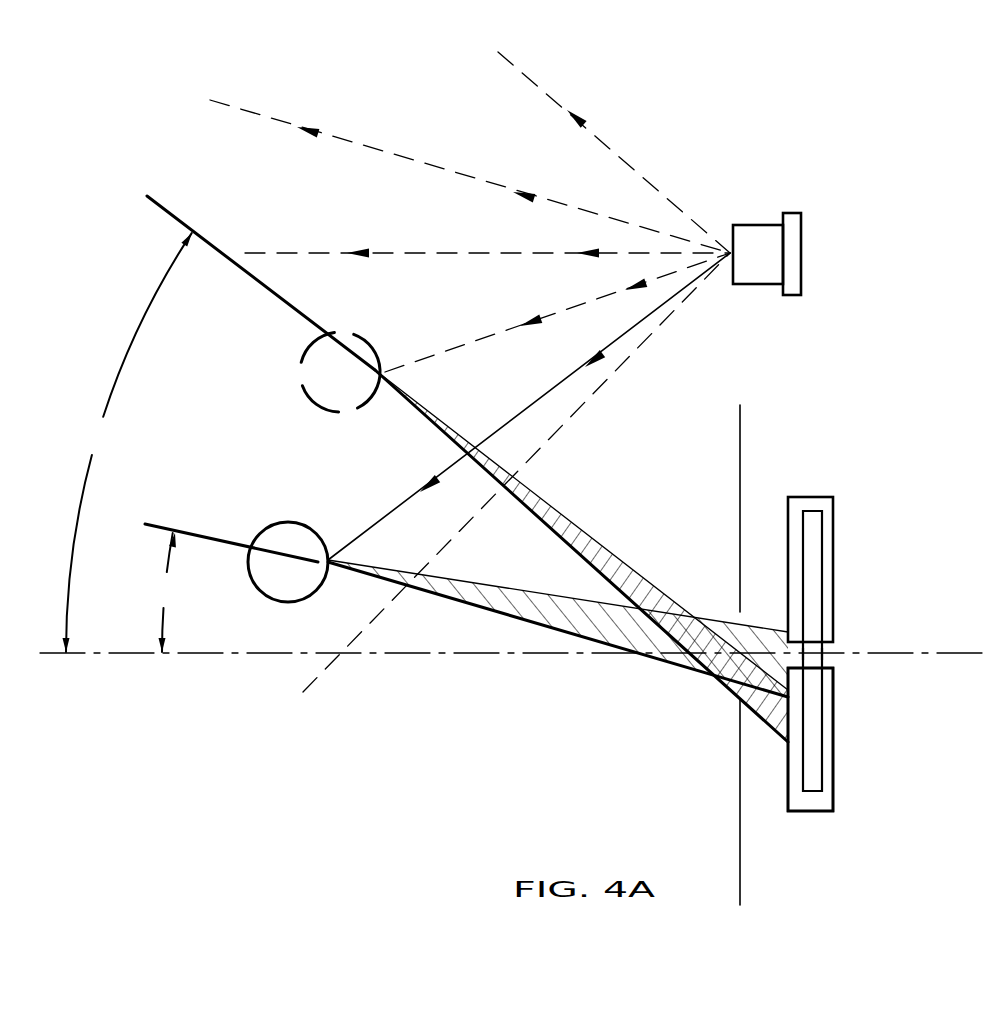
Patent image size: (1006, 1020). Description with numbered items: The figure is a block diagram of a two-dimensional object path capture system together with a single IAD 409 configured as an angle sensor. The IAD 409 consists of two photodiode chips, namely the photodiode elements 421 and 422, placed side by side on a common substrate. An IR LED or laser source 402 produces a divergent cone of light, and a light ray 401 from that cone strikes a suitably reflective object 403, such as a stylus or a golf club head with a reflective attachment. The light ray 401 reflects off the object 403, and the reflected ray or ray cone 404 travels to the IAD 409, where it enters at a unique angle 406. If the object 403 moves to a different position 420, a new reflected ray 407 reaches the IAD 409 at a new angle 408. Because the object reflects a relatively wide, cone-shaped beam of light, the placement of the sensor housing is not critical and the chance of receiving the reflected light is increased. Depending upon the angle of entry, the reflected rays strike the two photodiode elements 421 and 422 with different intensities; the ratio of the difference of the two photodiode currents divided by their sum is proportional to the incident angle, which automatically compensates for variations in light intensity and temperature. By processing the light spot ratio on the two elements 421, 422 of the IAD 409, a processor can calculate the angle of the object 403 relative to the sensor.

The light ray 401 is at (543, 398).
The IR LED 402 is at (803, 252).
The reflective object 403 is at (288, 523).
The reflected ray 404 is at (560, 585).
The angle 406 is at (164, 592).
The new reflected ray 407 is at (583, 522).
The new angle 408 is at (128, 442).
The IAD 409 is at (818, 812).
The different position 420 is at (337, 410).
The photodiode element 421 is at (833, 567).
The photodiode element 422 is at (848, 729).